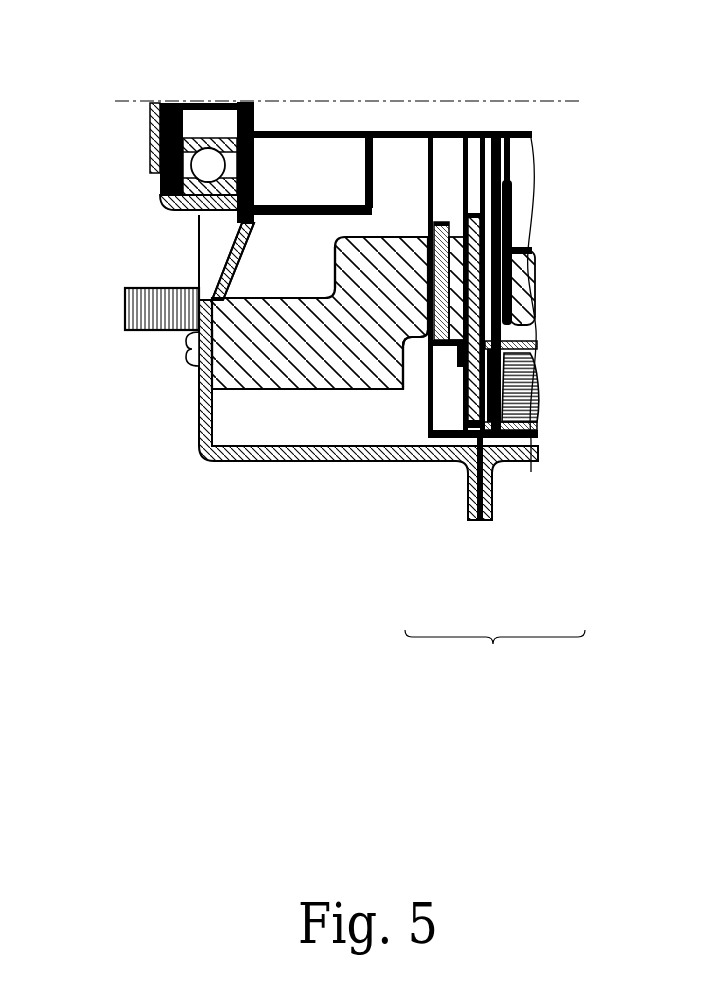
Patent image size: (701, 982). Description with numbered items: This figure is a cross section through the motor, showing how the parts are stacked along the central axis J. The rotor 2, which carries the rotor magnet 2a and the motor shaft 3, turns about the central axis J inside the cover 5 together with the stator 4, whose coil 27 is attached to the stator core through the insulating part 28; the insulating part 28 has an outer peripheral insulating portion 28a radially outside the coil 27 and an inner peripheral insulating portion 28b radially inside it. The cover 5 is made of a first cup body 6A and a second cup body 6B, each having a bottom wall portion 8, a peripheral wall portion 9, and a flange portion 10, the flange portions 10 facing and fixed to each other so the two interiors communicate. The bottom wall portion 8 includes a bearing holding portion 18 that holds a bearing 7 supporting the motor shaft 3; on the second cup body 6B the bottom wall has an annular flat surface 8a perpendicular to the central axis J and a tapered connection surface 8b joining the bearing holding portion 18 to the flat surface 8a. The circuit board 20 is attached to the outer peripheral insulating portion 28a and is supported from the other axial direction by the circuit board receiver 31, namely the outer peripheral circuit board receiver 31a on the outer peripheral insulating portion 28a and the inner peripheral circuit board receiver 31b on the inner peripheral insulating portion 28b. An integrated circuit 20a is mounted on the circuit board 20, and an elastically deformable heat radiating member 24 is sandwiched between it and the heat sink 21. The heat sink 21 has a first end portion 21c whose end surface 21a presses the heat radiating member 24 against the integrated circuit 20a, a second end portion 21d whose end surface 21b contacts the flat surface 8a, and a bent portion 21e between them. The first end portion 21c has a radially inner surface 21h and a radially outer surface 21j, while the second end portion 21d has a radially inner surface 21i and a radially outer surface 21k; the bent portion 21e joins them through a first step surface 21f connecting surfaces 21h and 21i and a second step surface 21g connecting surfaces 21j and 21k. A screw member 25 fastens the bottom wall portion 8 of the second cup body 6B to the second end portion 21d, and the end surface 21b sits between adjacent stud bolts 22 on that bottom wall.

The central axis J is at (558, 100).
The rotor 2 is at (557, 231).
The rotor magnet 2a is at (528, 270).
The motor shaft 3 is at (513, 121).
The stator 4 is at (571, 430).
The cover 5 is at (495, 649).
The first cup body 6A is at (541, 461).
The second cup body 6B is at (440, 464).
The bearing 7 is at (168, 210).
The bottom wall portion 8 is at (349, 423).
The flat surface 8a is at (222, 368).
The connection surface 8b is at (243, 262).
The peripheral wall portion 9 is at (323, 462).
The flange portion 10 is at (468, 497).
The bearing holding portion 18 is at (156, 178).
The circuit board 20 is at (463, 311).
The integrated circuit 20a is at (493, 135).
The heat sink 21 is at (292, 293).
The end surface 21a is at (444, 224).
The end surface 21b is at (202, 355).
The first end portion 21c is at (422, 234).
The second end portion 21d is at (243, 393).
The bent portion 21e is at (337, 258).
The first step surface 21f is at (243, 104).
The second step surface 21g is at (402, 387).
The surface facing the radial inside 21h is at (368, 213).
The surface facing the radial inside 21i is at (222, 297).
The surface facing the radial outside 21j is at (457, 400).
The surface facing the radial outside 21k is at (275, 396).
The stud bolt 22 is at (121, 302).
The heat radiating member 24 is at (460, 213).
The screw member 25 is at (186, 348).
The coil 27 is at (537, 402).
The insulating part 28 is at (557, 407).
The outer peripheral insulating portion 28a is at (532, 433).
The inner peripheral insulating portion 28b is at (536, 342).
The circuit board receiver 31 is at (571, 445).
The outer peripheral circuit board receiver 31a is at (490, 436).
The inner peripheral circuit board receiver 31b is at (512, 357).